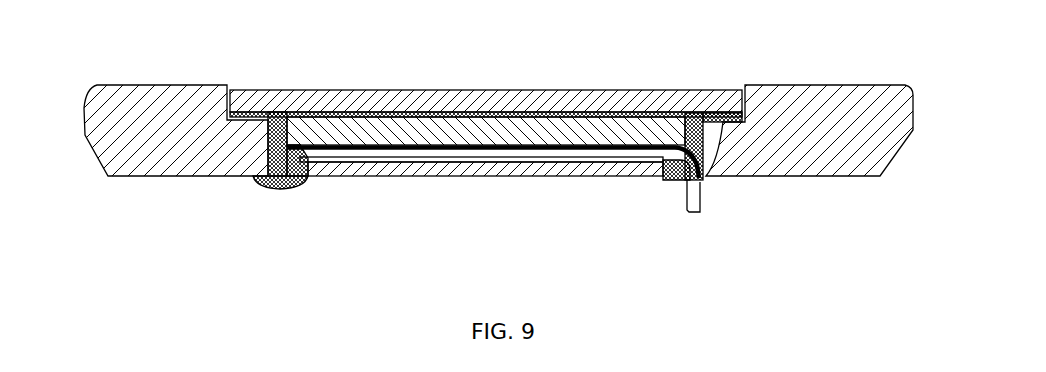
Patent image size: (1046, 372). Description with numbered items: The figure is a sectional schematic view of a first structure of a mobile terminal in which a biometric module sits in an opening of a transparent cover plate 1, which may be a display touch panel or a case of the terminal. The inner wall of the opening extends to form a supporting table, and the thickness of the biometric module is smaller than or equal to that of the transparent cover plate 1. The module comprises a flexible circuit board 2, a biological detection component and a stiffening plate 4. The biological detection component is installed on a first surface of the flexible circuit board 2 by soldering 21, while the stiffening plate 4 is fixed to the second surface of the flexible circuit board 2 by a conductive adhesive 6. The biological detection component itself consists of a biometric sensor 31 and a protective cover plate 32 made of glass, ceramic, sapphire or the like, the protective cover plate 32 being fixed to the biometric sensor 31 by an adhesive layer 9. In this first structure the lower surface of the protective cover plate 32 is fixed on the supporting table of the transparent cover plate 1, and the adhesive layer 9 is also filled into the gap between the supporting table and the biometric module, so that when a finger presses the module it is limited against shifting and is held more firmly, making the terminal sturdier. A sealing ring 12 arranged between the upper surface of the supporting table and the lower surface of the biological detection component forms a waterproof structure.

The transparent cover plate 1 is at (193, 95).
The protective cover plate 32 is at (402, 105).
The adhesive layer 9 is at (533, 112).
The biometric sensor 31 is at (647, 115).
The flexible circuit board 2 is at (288, 188).
The soldering 21 is at (393, 150).
The conductive adhesive 6 is at (483, 157).
The stiffening plate 4 is at (593, 153).
The sealing ring 12 is at (712, 183).